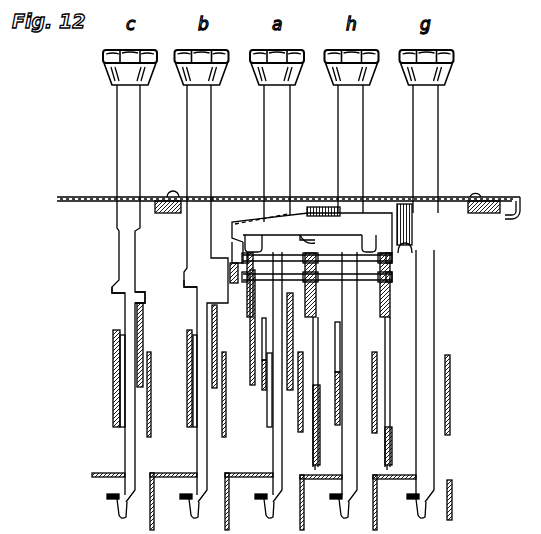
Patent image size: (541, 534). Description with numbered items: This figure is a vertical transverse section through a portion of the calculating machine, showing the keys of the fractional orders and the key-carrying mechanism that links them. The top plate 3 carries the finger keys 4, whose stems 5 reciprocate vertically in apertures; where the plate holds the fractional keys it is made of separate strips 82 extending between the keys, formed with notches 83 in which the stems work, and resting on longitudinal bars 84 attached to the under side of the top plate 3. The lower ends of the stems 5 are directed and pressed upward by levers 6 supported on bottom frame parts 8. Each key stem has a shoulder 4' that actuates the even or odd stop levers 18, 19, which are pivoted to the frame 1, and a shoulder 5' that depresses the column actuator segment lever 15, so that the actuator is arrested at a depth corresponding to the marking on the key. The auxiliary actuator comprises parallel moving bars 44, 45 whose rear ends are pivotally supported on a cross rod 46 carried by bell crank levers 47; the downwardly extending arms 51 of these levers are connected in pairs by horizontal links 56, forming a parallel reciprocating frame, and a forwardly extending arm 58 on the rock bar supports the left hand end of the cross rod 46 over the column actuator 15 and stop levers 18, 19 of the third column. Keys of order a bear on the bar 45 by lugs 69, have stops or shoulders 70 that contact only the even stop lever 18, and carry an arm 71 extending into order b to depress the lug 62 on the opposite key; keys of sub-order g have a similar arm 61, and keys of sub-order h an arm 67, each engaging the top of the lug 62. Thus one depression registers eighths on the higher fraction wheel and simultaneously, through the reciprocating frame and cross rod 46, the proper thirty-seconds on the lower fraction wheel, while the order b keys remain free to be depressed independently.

The frame 1 is at (149, 430).
The top plate 3 is at (64, 197).
The finger keys 4 is at (278, 47).
The shoulder 4' is at (146, 298).
The key stems 5 is at (275, 293).
The key stem shoulder 5' is at (144, 283).
The levers 6 is at (275, 512).
The bottom frame parts 8 is at (92, 475).
The column actuator segment levers 15 is at (143, 337).
The even stop lever 18 is at (115, 400).
The odd stop lever 19 is at (123, 428).
The parallel moving bar 44 is at (389, 302).
The parallel moving bar 45 is at (314, 300).
The cross rod 46 is at (394, 277).
The bell crank levers 47 is at (318, 350).
The downwardly extending arm 51 is at (313, 450).
The horizontal links 56 is at (321, 445).
The forwardly extending arm 58 is at (244, 327).
The arm 61 is at (236, 226).
The lug 62 is at (230, 247).
The arm 67 is at (308, 206).
The lugs 69 is at (318, 243).
The stops or shoulders 70 is at (261, 285).
The arm 71 is at (262, 206).
The strips 82 is at (381, 197).
The notches 83 is at (217, 197).
The longitudinal bars 84 is at (167, 213).